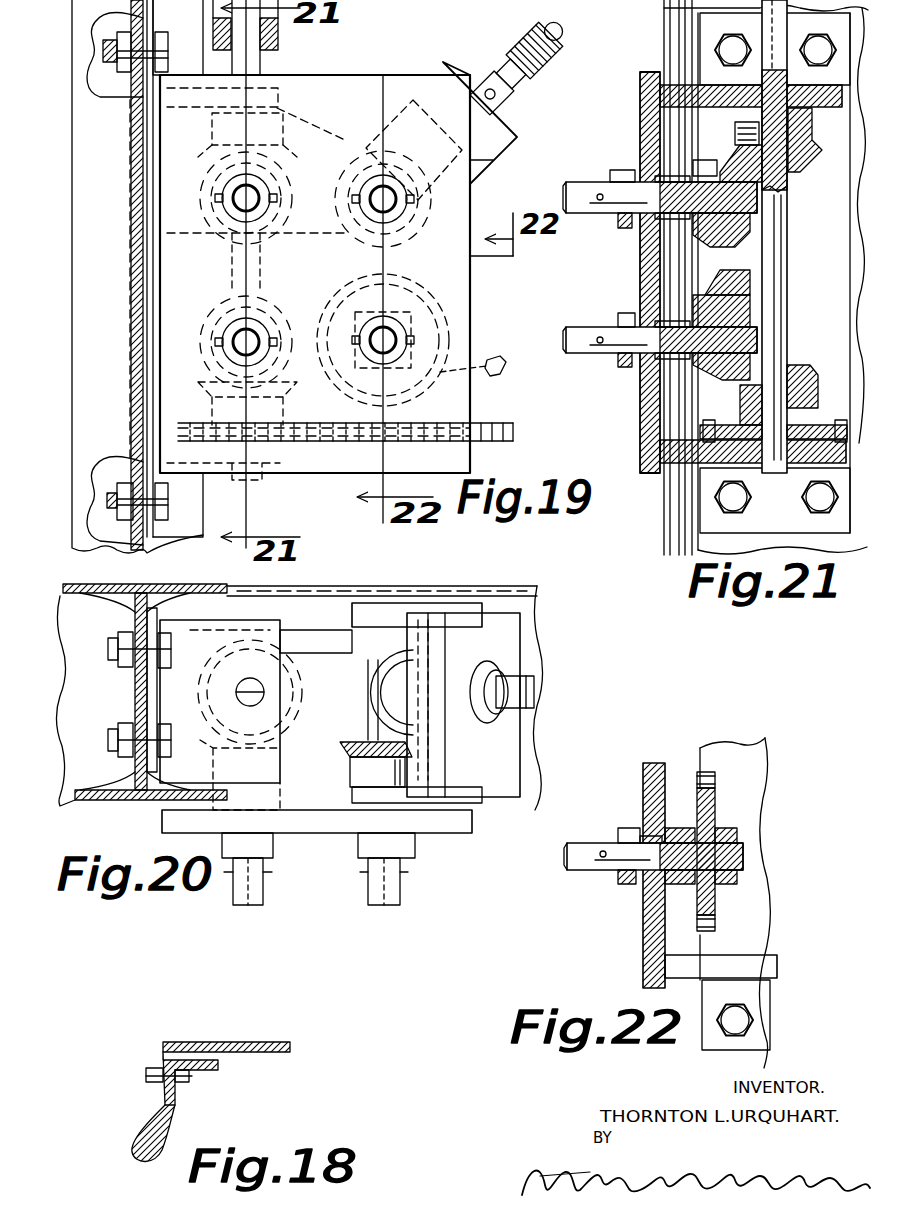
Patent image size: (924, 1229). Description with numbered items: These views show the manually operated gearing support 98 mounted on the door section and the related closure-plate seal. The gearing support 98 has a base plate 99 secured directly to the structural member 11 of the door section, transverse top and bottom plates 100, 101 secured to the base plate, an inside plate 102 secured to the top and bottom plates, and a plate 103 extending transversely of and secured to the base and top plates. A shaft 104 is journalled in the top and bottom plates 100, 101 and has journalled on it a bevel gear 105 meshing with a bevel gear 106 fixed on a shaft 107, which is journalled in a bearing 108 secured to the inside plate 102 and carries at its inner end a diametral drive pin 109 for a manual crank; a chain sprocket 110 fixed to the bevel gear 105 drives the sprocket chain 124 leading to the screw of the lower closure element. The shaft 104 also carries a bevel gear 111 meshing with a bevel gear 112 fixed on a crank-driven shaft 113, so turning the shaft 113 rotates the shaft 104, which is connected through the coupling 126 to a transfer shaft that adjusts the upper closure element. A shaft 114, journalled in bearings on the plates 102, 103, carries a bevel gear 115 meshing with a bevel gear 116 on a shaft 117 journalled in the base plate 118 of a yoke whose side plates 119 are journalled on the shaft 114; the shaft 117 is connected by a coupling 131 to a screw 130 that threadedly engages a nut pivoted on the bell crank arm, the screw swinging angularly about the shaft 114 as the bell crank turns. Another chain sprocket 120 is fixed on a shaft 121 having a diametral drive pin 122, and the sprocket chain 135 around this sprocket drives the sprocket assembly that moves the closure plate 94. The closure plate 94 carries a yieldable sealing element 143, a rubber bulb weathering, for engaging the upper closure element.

In FIG. 19, the structural member 11 is at (132, 226).
In FIG. 20, the structural member 11 is at (160, 792).
In FIG. 18, the closure plate 94 is at (243, 1043).
In FIG. 19, the gearing support 98 is at (370, 68).
In FIG. 19, the base plate 99 is at (150, 34).
In FIG. 21, the base plate 99 is at (790, 528).
In FIG. 20, the base plate 99 is at (152, 617).
In FIG. 22, the base plate 99 is at (753, 740).
In FIG. 19, the top plate 100 is at (280, 92).
In FIG. 21, the top plate 100 is at (813, 83).
In FIG. 20, the top plate 100 is at (278, 618).
In FIG. 19, the bottom plate 101 is at (283, 456).
In FIG. 21, the bottom plate 101 is at (797, 470).
In FIG. 22, the bottom plate 101 is at (725, 965).
In FIG. 19, the inside plate 102 is at (458, 308).
In FIG. 21, the inside plate 102 is at (648, 249).
In FIG. 20, the inside plate 102 is at (453, 823).
In FIG. 22, the inside plate 102 is at (647, 907).
In FIG. 20, the plate 103 is at (335, 645).
In FIG. 19, the shaft 104 is at (262, 60).
In FIG. 21, the shaft 104 is at (787, 270).
In FIG. 20, the shaft 104 is at (256, 681).
In FIG. 19, the bevel gear 105 is at (285, 386).
In FIG. 21, the bevel gear 105 is at (808, 370).
In FIG. 19, the bevel gear 106 is at (210, 326).
In FIG. 21, the bevel gear 106 is at (735, 298).
In FIG. 19, the shaft 107 is at (247, 343).
In FIG. 21, the shaft 107 is at (605, 356).
In FIG. 21, the bearing 108 is at (688, 383).
In FIG. 19, the diametral drive pin 109 is at (255, 356).
In FIG. 21, the diametral drive pin 109 is at (600, 336).
In FIG. 19, the chain sprocket 110 is at (181, 424).
In FIG. 21, the chain sprocket 110 is at (817, 422).
In FIG. 19, the bevel gear 111 is at (200, 155).
In FIG. 21, the bevel gear 111 is at (817, 146).
In FIG. 20, the bevel gear 111 is at (294, 712).
In FIG. 19, the bevel gear 112 is at (197, 204).
In FIG. 21, the bevel gear 112 is at (728, 241).
In FIG. 20, the bevel gear 112 is at (295, 738).
In FIG. 19, the shaft 113 is at (232, 202).
In FIG. 21, the shaft 113 is at (604, 215).
In FIG. 20, the shaft 113 is at (257, 882).
In FIG. 19, the shaft 114 is at (380, 208).
In FIG. 20, the shaft 114 is at (377, 693).
In FIG. 19, the bevel gear 115 is at (283, 206).
In FIG. 20, the bevel gear 115 is at (348, 744).
In FIG. 19, the bevel gear 116 is at (372, 152).
In FIG. 20, the bevel gear 116 is at (387, 678).
In FIG. 19, the shaft 117 is at (500, 118).
In FIG. 19, the base plate 118 is at (495, 150).
In FIG. 20, the base plate 118 is at (517, 637).
In FIG. 19, the side plates 119 is at (473, 176).
In FIG. 20, the side plates 119 is at (457, 608).
In FIG. 19, the chain sprocket 120 is at (460, 343).
In FIG. 22, the chain sprocket 120 is at (718, 903).
In FIG. 19, the shaft 121 is at (385, 326).
In FIG. 22, the shaft 121 is at (747, 848).
In FIG. 19, the diametral drive pin 122 is at (403, 342).
In FIG. 22, the diametral drive pin 122 is at (602, 852).
In FIG. 19, the sprocket chain 124 is at (480, 425).
In FIG. 21, the sprocket chain 124 is at (810, 458).
In FIG. 19, the coupling 126 is at (279, 40).
In FIG. 19, the screw 130 is at (553, 46).
In FIG. 20, the screw 130 is at (531, 683).
In FIG. 19, the coupling 131 is at (513, 92).
In FIG. 19, the sprocket chain 135 is at (494, 372).
In FIG. 22, the sprocket chain 135 is at (714, 779).
In FIG. 18, the yieldable sealing element 143 is at (170, 1127).